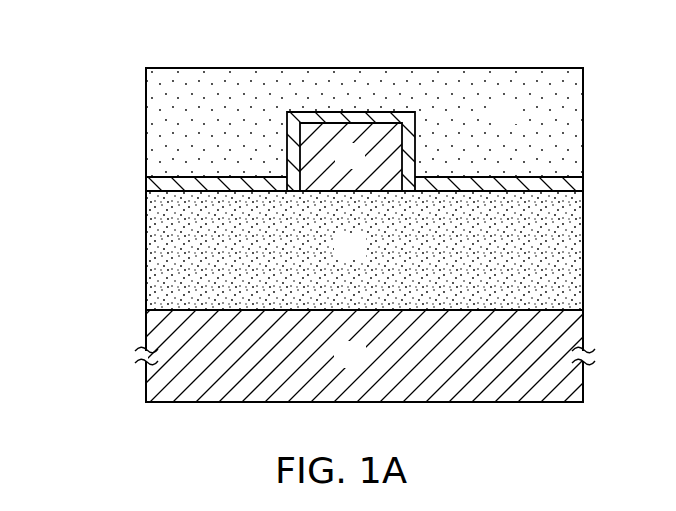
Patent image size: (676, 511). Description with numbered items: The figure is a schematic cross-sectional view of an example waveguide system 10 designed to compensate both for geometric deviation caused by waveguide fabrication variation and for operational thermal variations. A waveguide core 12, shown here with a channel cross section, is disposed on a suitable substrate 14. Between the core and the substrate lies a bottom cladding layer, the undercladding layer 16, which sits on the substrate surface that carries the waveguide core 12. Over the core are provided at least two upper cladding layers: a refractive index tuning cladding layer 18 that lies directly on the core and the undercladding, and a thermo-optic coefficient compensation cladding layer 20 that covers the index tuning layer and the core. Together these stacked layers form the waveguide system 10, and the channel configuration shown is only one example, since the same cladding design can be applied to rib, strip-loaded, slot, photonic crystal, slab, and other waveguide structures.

The waveguide system 10 is at (83, 51).
The waveguide core 12 is at (363, 166).
The substrate 14 is at (363, 367).
The undercladding layer 16 is at (363, 258).
The refractive index tuning cladding layer 18 is at (146, 185).
The thermo-optic coefficient compensation cladding layer 20 is at (521, 123).